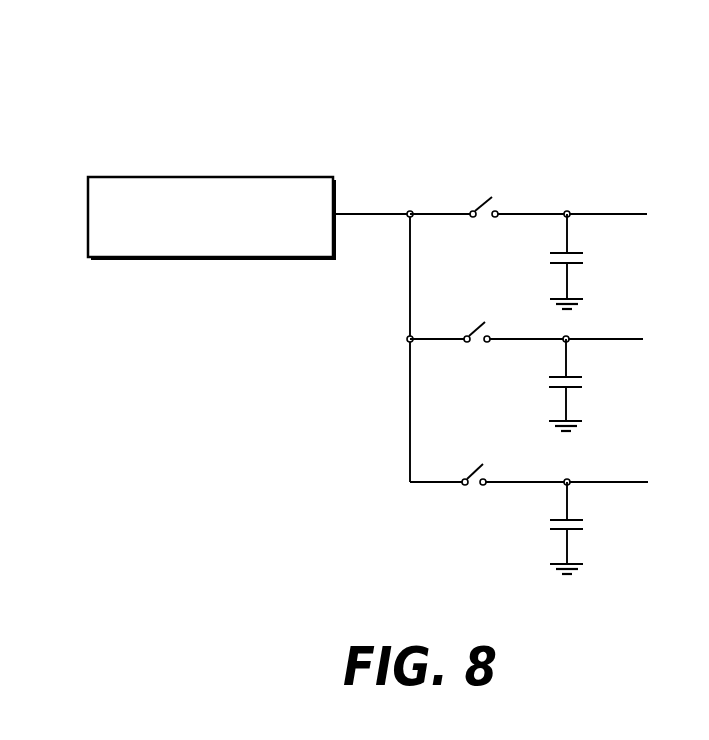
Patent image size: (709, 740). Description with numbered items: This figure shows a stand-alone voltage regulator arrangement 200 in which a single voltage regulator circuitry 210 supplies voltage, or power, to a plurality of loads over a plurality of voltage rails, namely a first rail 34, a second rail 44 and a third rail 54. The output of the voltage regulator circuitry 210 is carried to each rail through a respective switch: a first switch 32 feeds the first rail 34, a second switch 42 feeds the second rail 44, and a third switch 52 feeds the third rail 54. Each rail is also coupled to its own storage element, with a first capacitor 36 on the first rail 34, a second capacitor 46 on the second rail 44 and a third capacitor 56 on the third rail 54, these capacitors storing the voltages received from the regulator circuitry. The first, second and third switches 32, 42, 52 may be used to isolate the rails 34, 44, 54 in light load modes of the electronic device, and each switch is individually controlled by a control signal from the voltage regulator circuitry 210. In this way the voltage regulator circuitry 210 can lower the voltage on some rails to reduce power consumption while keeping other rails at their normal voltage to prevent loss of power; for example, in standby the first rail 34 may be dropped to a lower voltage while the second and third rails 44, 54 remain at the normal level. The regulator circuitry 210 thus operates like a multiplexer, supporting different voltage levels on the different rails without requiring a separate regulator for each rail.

The voltage regulator system 200 is at (110, 104).
The voltage regulator circuitry 210 is at (240, 258).
The first switch 32 is at (479, 224).
The first rail 34 is at (623, 213).
The first capacitor 36 is at (585, 259).
The second switch 42 is at (474, 349).
The second rail 44 is at (618, 338).
The second capacitor 46 is at (585, 382).
The third switch 52 is at (476, 492).
The third rail 54 is at (627, 481).
The third capacitor 56 is at (588, 523).